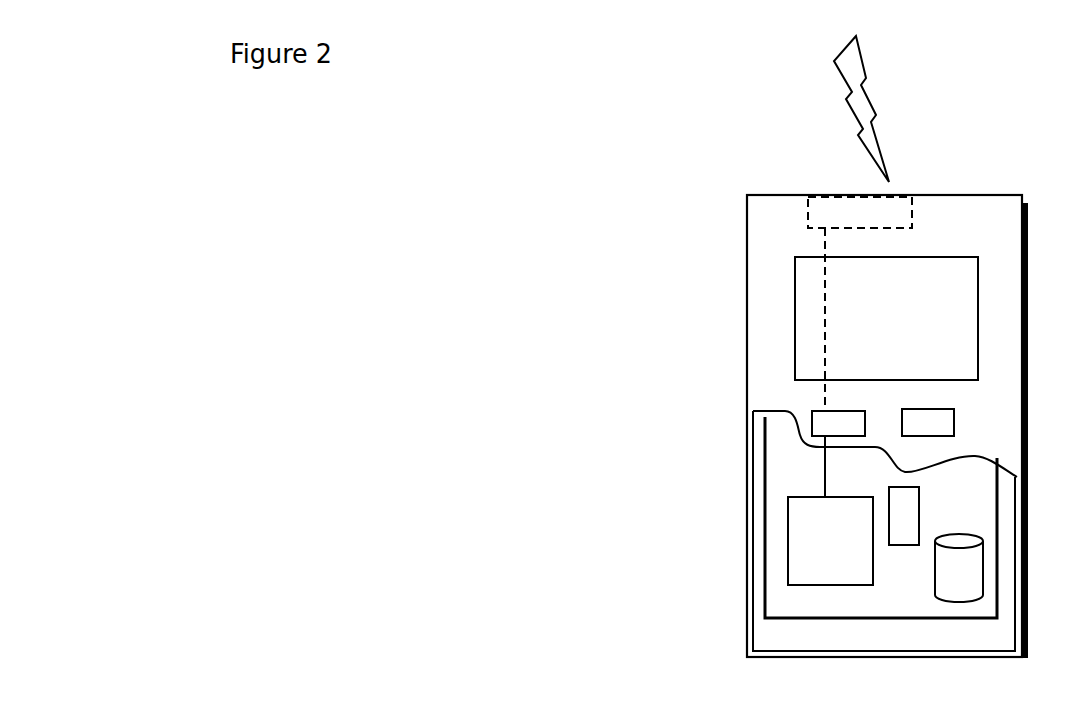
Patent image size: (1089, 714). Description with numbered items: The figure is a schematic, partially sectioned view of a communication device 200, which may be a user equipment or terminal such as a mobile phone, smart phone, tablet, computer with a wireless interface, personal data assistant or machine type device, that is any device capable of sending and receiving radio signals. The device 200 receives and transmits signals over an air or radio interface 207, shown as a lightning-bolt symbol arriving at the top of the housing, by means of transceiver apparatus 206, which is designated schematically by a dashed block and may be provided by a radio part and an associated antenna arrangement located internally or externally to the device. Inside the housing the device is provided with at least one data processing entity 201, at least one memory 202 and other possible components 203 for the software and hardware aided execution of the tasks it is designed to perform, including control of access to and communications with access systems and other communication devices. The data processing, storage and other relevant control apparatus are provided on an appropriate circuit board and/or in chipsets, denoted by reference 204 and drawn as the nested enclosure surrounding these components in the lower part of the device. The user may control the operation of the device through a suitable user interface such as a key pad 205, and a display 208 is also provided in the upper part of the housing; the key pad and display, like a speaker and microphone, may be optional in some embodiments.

The communication device 200 is at (747, 234).
The data processing entity 201 is at (793, 527).
The memory 202 is at (953, 577).
The other possible components 203 is at (903, 503).
The circuit board and/or chipsets 204 is at (788, 603).
The key pad 205 is at (815, 425).
The transceiver apparatus 206 is at (902, 208).
The air or radio interface 207 is at (892, 130).
The display 208 is at (810, 305).